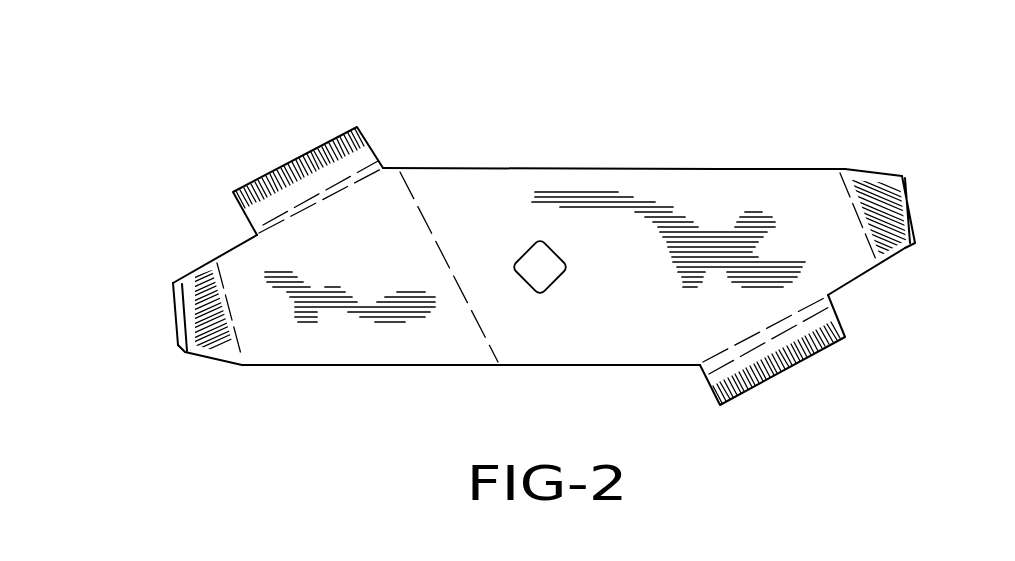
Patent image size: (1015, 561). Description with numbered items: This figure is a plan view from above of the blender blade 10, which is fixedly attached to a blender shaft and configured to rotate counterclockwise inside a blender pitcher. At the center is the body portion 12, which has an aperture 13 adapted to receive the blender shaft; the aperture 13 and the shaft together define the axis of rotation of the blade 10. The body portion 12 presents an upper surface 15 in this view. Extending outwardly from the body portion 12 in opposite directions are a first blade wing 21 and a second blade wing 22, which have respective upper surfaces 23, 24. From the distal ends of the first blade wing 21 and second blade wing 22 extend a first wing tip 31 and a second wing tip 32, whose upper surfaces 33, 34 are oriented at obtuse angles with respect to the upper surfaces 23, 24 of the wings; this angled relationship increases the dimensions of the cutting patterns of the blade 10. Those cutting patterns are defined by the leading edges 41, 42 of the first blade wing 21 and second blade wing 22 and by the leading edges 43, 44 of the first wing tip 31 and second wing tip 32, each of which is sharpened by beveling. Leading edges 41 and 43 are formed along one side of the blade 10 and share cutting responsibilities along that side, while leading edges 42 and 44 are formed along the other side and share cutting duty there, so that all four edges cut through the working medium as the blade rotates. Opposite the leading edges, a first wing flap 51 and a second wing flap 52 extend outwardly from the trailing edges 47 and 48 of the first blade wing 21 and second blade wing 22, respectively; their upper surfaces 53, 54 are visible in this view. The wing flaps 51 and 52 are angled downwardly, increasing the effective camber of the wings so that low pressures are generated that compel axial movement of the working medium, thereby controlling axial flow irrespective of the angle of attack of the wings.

The blender blade 10 is at (146, 160).
The body portion 12 is at (462, 178).
The aperture 13 is at (534, 266).
The upper surface 15 is at (636, 320).
The first blade wing 21 is at (697, 205).
The second blade wing 22 is at (381, 332).
The upper surface 23 is at (790, 190).
The upper surface 24 is at (322, 342).
The first wing tip 31 is at (903, 215).
The second wing tip 32 is at (188, 340).
The upper surface 33 is at (892, 188).
The upper surface 34 is at (195, 303).
The leading edge 41 is at (660, 168).
The leading edge 42 is at (447, 367).
The leading edge 43 is at (878, 168).
The leading edge 44 is at (217, 362).
The trailing edge 47 is at (853, 278).
The trailing edge 48 is at (233, 244).
The first wing flap 51 is at (809, 366).
The second wing flap 52 is at (307, 151).
The upper surface 53 is at (762, 350).
The upper surface 54 is at (330, 147).